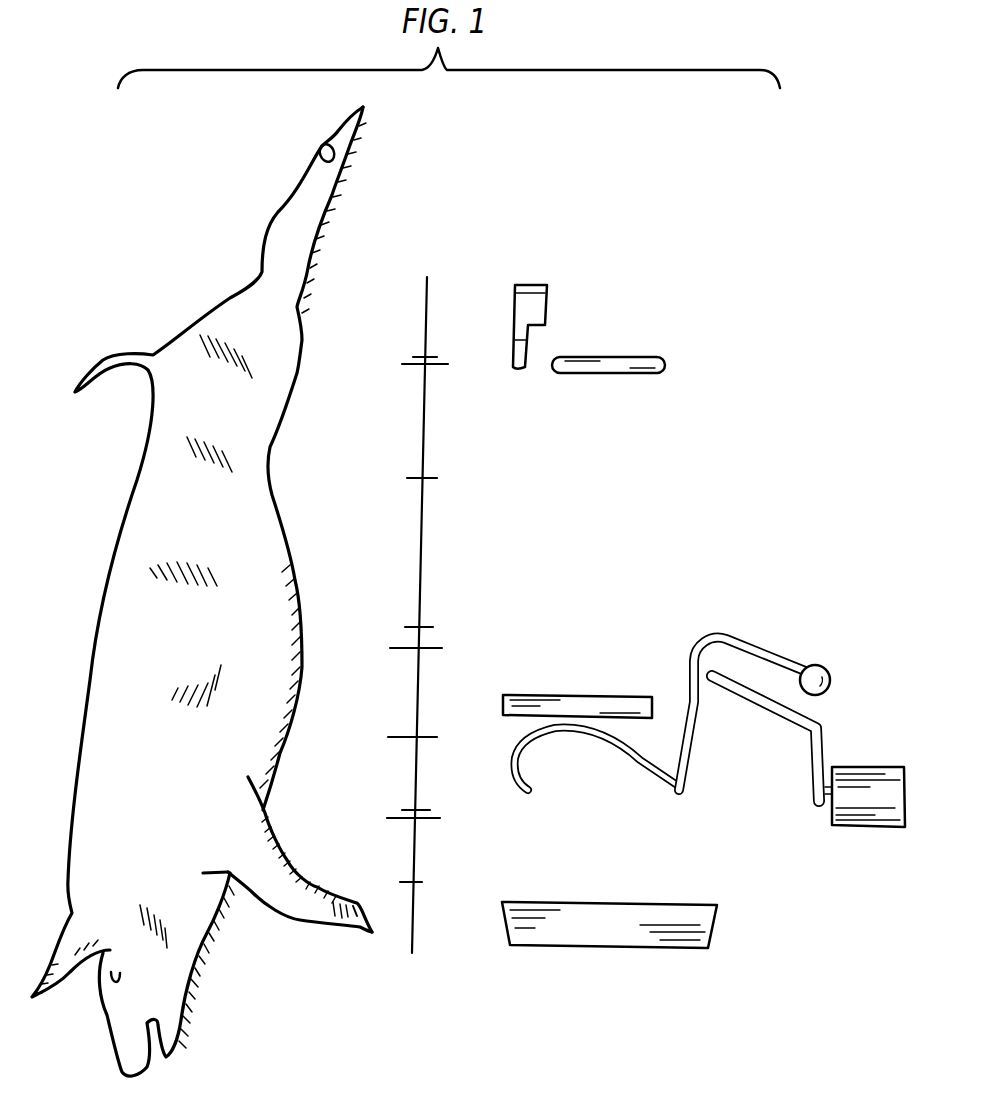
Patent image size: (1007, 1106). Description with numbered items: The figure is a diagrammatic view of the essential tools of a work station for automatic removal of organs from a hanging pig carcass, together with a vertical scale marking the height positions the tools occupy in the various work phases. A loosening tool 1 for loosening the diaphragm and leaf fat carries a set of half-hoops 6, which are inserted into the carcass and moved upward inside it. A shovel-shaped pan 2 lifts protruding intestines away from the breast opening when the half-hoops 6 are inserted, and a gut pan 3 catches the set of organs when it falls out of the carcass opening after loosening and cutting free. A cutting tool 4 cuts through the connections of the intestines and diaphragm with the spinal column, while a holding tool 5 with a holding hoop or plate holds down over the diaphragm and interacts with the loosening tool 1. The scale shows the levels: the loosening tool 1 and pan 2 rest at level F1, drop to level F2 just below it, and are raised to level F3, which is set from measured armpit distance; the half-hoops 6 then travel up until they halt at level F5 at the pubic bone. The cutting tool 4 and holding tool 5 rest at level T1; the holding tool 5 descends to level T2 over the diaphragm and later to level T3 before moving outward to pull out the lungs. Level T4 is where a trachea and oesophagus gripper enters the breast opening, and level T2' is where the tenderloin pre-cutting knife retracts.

The loosening tool 1 is at (690, 773).
The shovel-shaped pan 2 is at (583, 707).
The gut pan 3 is at (608, 920).
The cutting tool 4 is at (538, 284).
The holding tool 5 is at (634, 360).
The half-hoops 6 is at (607, 747).
The level T1 is at (428, 357).
The level T2' is at (446, 445).
The level T2 is at (437, 596).
The level T3 is at (418, 808).
The level T4 is at (418, 885).
The level F1 is at (410, 740).
The level F2 is at (410, 820).
The level F3 is at (415, 650).
The level F5 is at (422, 368).